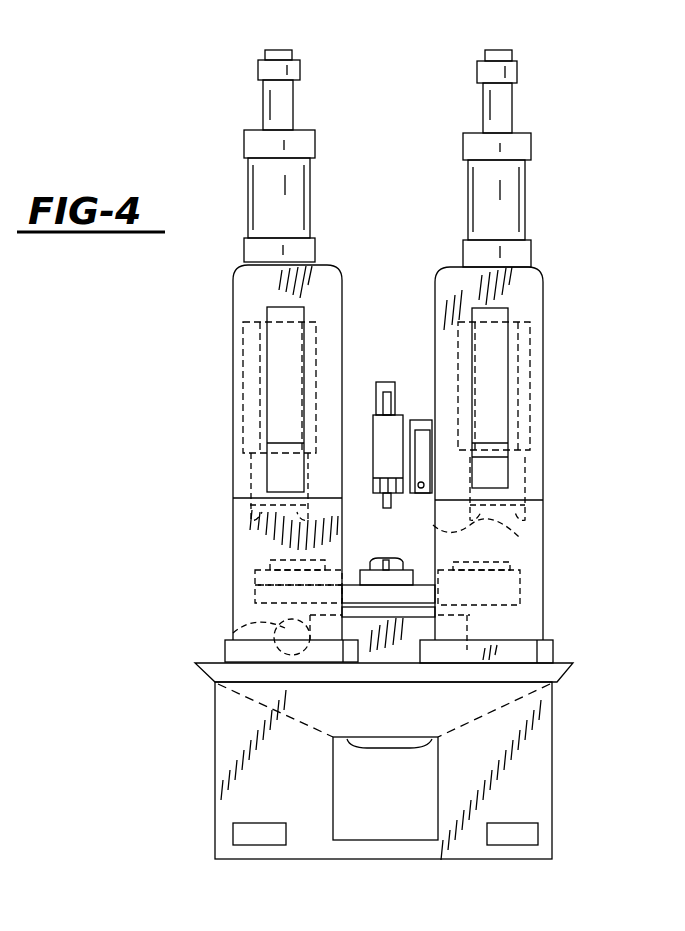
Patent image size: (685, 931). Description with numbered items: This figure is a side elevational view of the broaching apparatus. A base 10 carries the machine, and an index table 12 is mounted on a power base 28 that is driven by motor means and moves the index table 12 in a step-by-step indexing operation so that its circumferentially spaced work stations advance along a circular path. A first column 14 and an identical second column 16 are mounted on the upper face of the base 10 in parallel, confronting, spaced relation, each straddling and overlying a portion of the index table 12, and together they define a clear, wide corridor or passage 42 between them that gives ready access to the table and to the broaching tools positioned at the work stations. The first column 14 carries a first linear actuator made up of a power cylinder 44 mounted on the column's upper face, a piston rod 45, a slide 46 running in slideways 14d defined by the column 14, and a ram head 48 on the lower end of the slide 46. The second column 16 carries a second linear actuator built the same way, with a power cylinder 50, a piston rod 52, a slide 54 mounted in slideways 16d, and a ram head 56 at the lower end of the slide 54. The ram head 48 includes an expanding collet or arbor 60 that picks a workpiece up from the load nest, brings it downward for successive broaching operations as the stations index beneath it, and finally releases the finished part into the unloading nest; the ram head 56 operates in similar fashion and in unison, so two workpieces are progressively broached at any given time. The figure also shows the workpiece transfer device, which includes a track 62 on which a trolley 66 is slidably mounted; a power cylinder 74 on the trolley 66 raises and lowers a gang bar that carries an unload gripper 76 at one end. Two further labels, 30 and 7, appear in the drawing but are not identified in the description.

The base 10 is at (202, 726).
The index table 12 is at (532, 594).
The first column 14 is at (551, 433).
The slideways 14d is at (515, 340).
The second column 16 is at (243, 452).
The slideways 16d is at (278, 388).
The power base 28 is at (485, 627).
The pivot 30 is at (235, 629).
The corridor or passage 42 is at (388, 377).
The power cylinder 44 is at (517, 213).
The piston rod 45 is at (510, 108).
The slide 46 is at (531, 400).
The ram head 48 is at (520, 536).
The power cylinder 50 is at (304, 196).
The piston rod 52 is at (295, 103).
The slide 54 is at (237, 432).
The ram head 56 is at (250, 552).
The expanding collet or arbor 60 is at (243, 526).
The track 62 is at (418, 420).
The trolley 66 is at (373, 450).
The power cylinder 74 is at (384, 382).
The unload gripper 76 is at (386, 508).
The partial numeral 7 is at (6, 570).